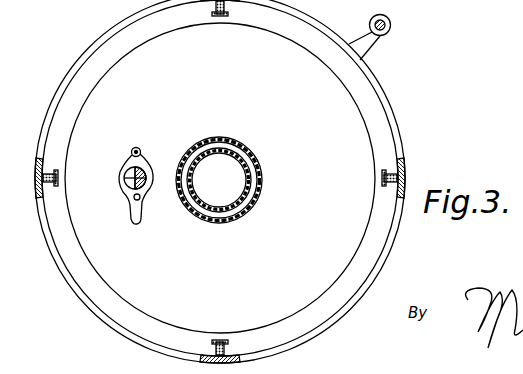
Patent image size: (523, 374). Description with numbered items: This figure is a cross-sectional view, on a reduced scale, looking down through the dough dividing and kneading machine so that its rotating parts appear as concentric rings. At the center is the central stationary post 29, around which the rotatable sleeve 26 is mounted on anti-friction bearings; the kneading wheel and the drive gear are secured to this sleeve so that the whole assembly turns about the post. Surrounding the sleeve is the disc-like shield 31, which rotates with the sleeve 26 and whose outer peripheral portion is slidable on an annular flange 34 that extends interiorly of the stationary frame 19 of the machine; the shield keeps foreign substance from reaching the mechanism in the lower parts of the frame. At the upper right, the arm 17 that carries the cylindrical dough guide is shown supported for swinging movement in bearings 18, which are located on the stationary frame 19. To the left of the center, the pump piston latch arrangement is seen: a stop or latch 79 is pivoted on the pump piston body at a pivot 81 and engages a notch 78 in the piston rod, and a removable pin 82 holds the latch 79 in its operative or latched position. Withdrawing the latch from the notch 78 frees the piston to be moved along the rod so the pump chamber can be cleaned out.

The arm 17 is at (391, 26).
The bearings 18 is at (386, 37).
The stationary frame 19 is at (405, 162).
The rotatable sleeve 26 is at (262, 176).
The central stationary post 29 is at (248, 185).
The disc-like shield 31 is at (367, 142).
The annular flange 34 is at (383, 148).
The notch 78 is at (124, 183).
The stop or latch 79 is at (124, 174).
The pivot 81 is at (140, 150).
The removable pin 82 is at (140, 199).